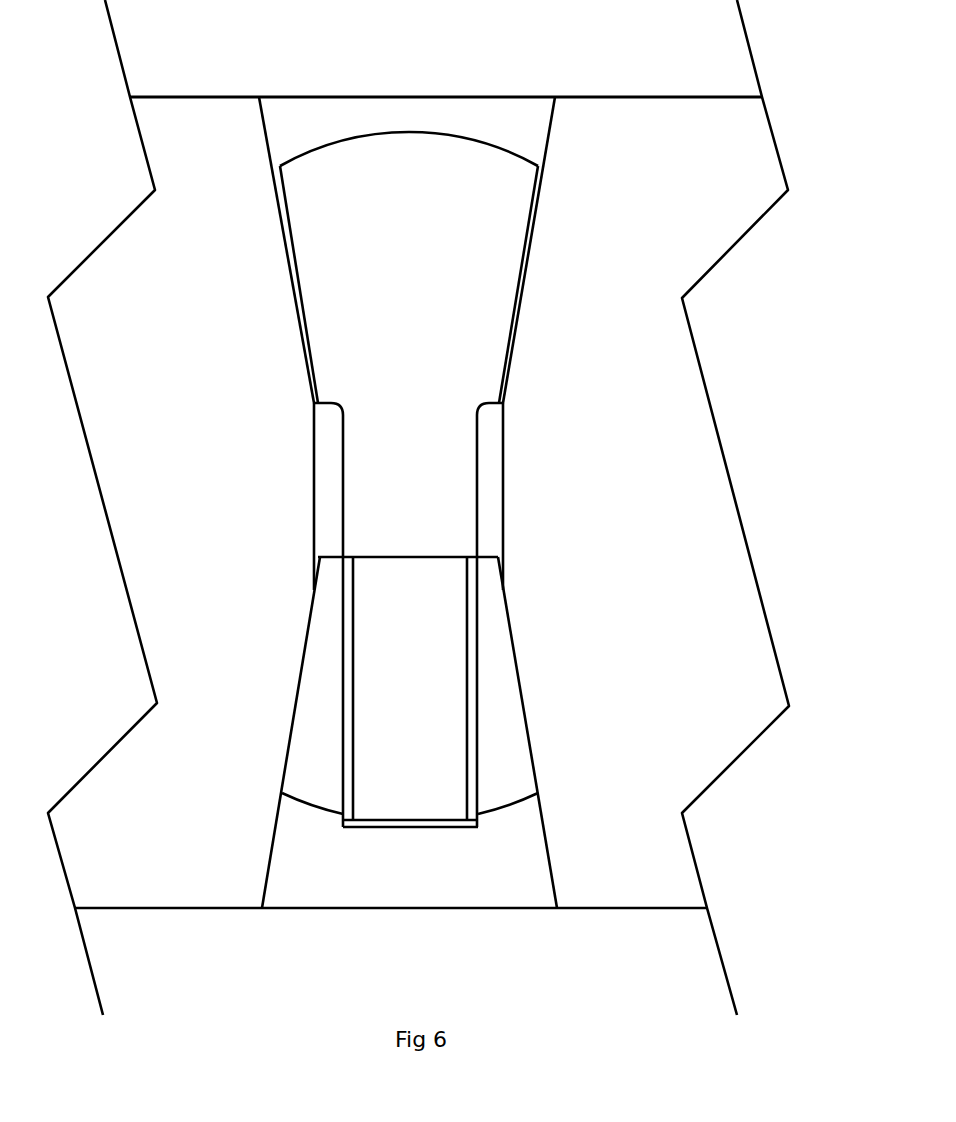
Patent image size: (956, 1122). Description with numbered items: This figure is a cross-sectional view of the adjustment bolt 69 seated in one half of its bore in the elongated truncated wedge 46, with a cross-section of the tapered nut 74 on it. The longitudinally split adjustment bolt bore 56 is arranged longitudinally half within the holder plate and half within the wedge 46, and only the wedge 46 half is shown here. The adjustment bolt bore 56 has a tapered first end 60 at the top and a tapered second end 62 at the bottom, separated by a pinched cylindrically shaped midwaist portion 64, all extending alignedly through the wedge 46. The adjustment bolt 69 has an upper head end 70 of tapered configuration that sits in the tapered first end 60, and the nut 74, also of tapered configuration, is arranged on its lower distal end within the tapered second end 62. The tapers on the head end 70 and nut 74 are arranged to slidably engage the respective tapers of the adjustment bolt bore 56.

The elongated truncated wedge 46 is at (692, 243).
The adjustment bolt bore 56 is at (327, 115).
The tapered first end 60 is at (550, 121).
The tapered second end 62 is at (537, 823).
The pinched cylindrically shaped midwaist portion 64 is at (497, 463).
The adjustment bolt 69 is at (422, 314).
The head end 70 is at (480, 230).
The nut 74 is at (492, 662).